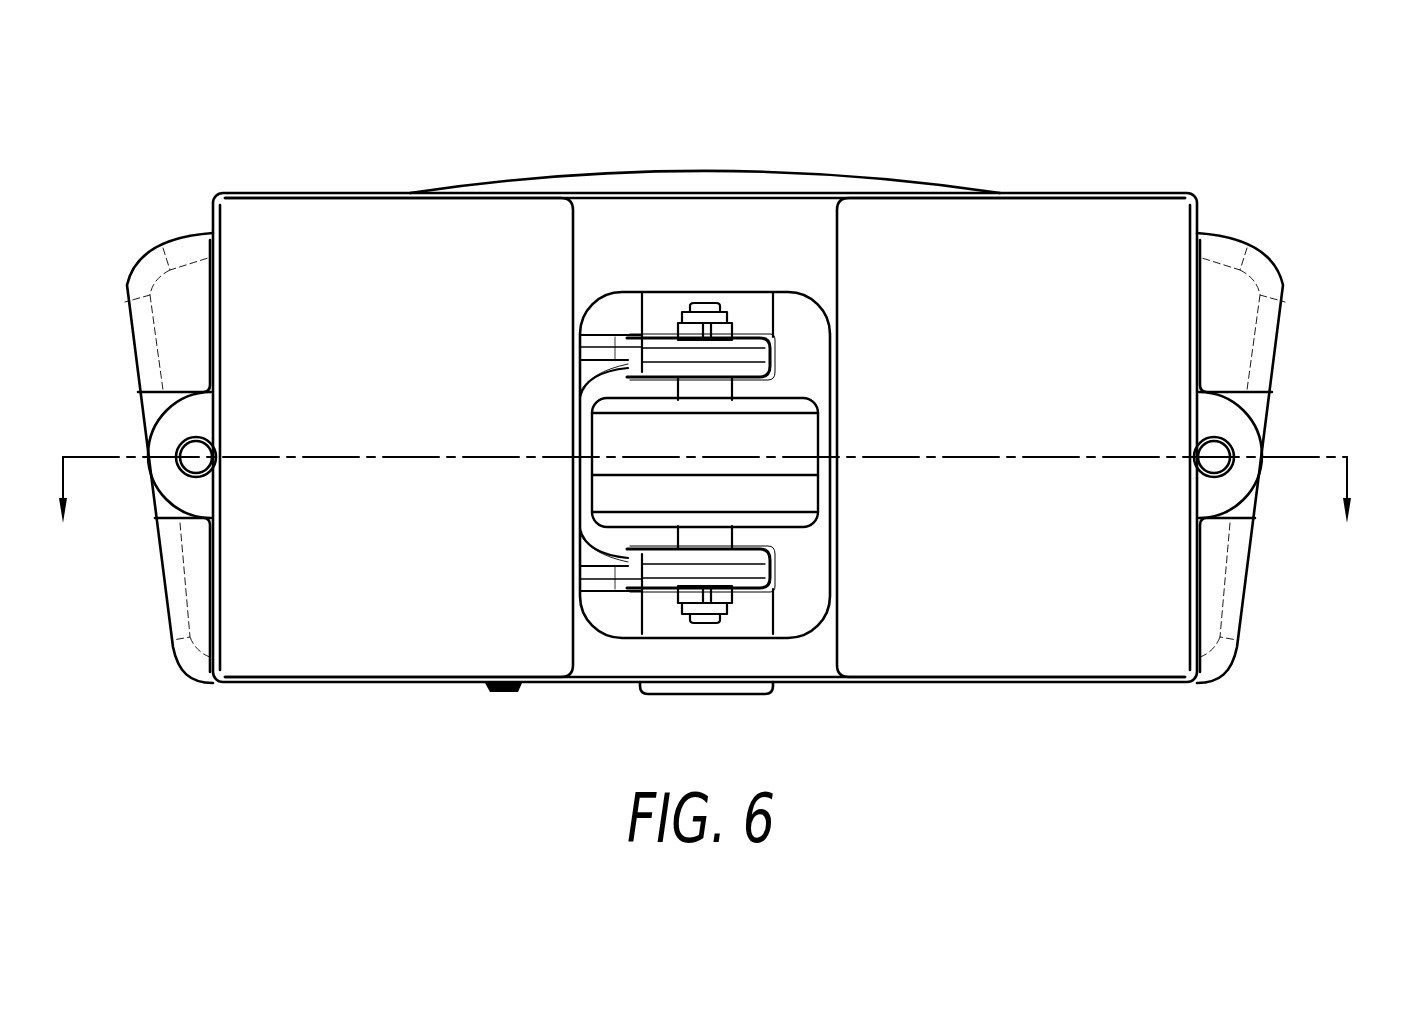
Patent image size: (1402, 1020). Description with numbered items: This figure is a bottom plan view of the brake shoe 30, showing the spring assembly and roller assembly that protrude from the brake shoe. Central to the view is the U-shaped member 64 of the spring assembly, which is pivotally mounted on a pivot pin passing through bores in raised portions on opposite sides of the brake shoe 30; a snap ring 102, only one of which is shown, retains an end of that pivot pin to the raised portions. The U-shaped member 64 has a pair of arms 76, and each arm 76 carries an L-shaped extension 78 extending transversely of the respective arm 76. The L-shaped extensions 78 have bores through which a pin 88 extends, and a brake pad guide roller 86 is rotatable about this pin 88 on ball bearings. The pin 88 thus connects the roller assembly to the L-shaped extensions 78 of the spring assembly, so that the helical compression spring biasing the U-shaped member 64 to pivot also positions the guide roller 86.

The brake shoe 30 is at (243, 86).
The U-shaped member 64 is at (590, 360).
The arms 76 is at (623, 335).
The L-shaped extension 78 is at (755, 313).
The brake pad guide roller 86 is at (782, 427).
The pin 88 is at (718, 537).
The snap ring 102 is at (483, 687).